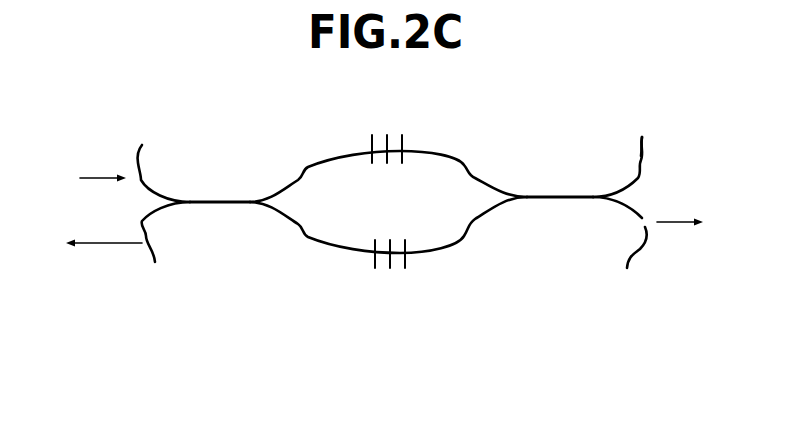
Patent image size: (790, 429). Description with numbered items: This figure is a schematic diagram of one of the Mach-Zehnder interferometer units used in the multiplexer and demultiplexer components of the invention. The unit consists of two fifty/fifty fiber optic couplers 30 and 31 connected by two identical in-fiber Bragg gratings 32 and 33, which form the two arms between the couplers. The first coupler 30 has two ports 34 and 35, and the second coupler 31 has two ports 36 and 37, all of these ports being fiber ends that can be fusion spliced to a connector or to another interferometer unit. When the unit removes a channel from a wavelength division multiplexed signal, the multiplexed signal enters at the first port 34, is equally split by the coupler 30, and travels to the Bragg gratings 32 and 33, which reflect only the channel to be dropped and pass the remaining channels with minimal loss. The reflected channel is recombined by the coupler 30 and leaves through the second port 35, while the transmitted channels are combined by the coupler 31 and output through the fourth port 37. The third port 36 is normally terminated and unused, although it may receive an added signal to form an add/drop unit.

The first 50/50 fiber optic coupler 30 is at (228, 148).
The second 50/50 fiber optic coupler 31 is at (566, 262).
The Bragg grating 32 is at (396, 116).
The Bragg grating 33 is at (399, 286).
The first port 34 is at (115, 148).
The second port 35 is at (121, 264).
The third port 36 is at (639, 134).
The fourth port 37 is at (659, 258).